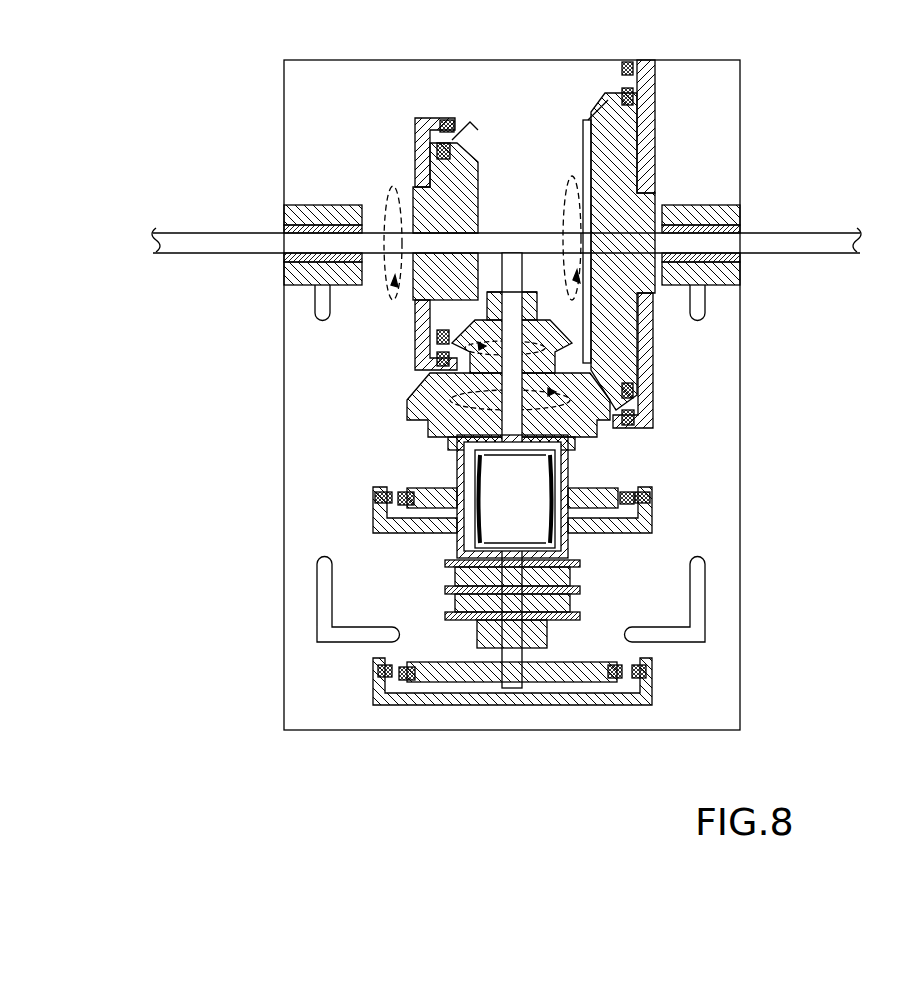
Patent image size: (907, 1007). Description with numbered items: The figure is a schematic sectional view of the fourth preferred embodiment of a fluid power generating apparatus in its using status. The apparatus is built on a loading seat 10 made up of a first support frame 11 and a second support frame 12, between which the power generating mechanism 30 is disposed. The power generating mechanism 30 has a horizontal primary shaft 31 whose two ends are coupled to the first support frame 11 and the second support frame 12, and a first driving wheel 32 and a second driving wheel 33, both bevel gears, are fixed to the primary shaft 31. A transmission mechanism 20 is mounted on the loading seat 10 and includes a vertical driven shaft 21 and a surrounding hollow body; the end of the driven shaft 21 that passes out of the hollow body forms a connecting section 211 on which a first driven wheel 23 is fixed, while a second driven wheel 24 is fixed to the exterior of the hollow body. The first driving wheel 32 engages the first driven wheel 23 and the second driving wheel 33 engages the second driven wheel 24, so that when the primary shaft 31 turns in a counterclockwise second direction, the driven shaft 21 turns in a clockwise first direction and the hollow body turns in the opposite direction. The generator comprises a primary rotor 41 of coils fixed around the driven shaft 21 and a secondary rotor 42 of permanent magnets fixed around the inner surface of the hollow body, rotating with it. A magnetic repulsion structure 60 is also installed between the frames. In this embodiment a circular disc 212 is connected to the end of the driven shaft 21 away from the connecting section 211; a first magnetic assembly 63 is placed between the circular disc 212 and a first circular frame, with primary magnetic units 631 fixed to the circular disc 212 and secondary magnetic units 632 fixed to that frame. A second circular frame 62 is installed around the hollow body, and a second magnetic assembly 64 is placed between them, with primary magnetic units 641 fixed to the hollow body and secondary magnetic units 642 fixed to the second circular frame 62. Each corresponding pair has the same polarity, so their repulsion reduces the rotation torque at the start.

The loading seat 10 is at (285, 400).
The first support frame 11 is at (308, 208).
The second support frame 12 is at (710, 210).
The transmission mechanism 20 is at (620, 424).
The driven shaft 21 is at (493, 240).
The connecting section 211 is at (508, 285).
The circular disc 212 is at (580, 662).
The first driven wheel 23 is at (470, 345).
The second driven wheel 24 is at (572, 420).
The power generating mechanism 30 is at (387, 180).
The primary shaft 31 is at (390, 222).
The first driving wheel 32 is at (470, 162).
The second driving wheel 33 is at (600, 138).
The primary rotor 41 is at (556, 538).
The secondary rotor 42 is at (457, 545).
The magnetic repulsion structure 60 is at (368, 545).
The second circular frame 62 is at (373, 520).
The first magnetic assembly 63 is at (345, 808).
The primary magnetic unit 631 is at (402, 682).
The secondary magnetic unit 632 is at (380, 680).
The second magnetic assembly 64 is at (392, 440).
The primary magnetic unit 641 is at (406, 492).
The secondary magnetic unit 642 is at (386, 492).